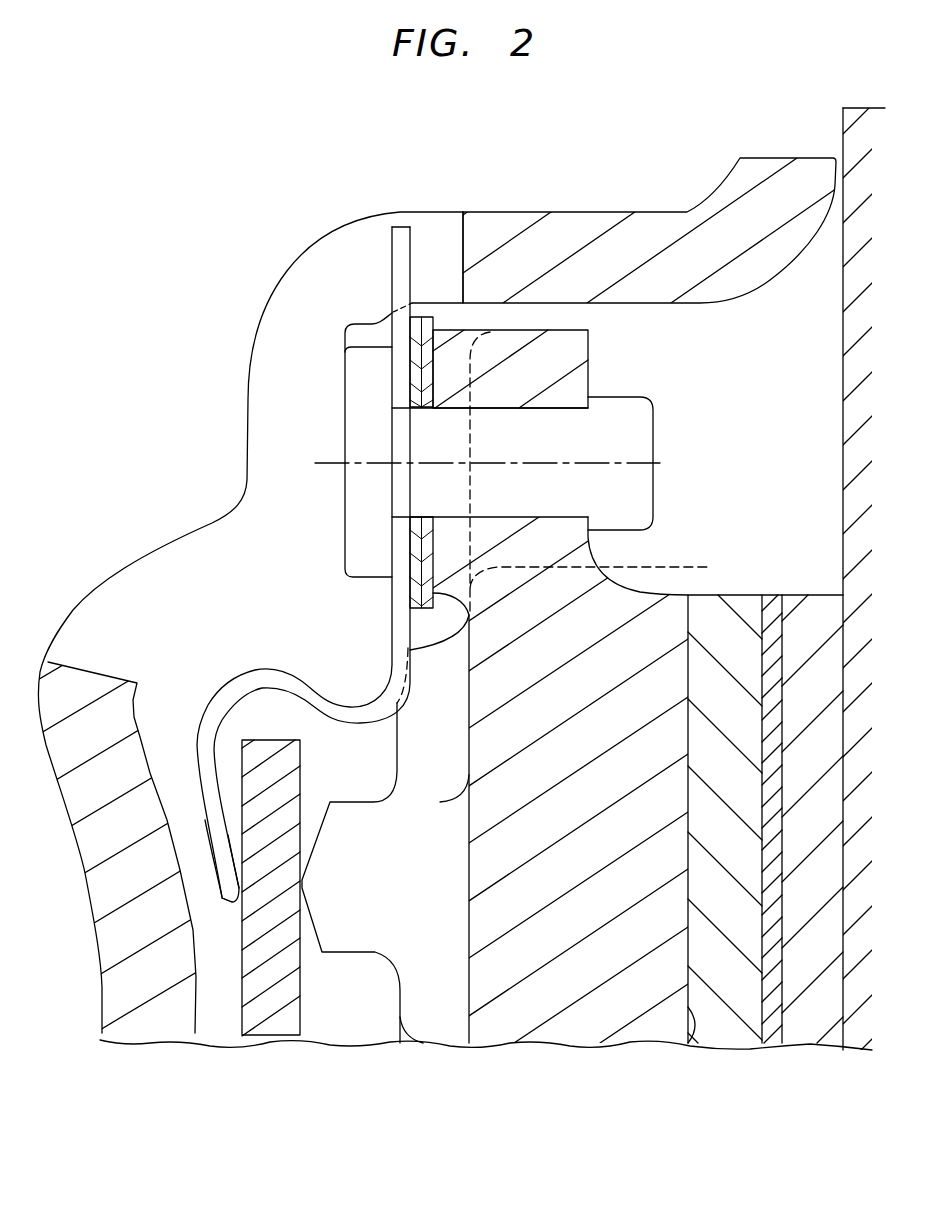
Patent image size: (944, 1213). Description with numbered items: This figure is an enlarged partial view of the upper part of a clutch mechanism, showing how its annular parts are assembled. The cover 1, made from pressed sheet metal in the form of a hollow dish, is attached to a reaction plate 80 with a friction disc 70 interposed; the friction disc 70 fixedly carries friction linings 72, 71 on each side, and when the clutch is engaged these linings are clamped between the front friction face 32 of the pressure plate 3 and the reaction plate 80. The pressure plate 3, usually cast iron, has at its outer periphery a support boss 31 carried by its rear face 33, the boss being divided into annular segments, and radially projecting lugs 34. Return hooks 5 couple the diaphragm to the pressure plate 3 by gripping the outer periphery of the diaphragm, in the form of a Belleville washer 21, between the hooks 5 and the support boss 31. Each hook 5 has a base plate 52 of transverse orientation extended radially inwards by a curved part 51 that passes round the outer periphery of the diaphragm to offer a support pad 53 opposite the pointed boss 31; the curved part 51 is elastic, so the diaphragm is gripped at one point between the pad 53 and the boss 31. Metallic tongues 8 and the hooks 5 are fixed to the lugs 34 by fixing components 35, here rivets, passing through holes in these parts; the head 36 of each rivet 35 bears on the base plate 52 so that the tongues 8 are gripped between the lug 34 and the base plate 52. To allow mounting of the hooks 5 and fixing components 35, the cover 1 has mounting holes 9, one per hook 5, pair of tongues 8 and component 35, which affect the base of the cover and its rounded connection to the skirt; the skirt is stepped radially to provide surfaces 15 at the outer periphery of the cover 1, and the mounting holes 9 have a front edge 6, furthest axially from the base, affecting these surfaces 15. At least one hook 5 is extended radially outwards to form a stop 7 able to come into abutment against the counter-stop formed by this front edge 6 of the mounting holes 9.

The cover 1 is at (170, 1045).
The pressure plate 3 is at (597, 1060).
The return hooks 5 is at (243, 646).
The front edge 6 is at (463, 228).
The stop 7 is at (391, 257).
The tongues 8 is at (422, 315).
The mounting holes 9 is at (88, 670).
The surfaces 15 is at (573, 212).
The Belleville washer 21 is at (242, 1007).
The support boss 31 is at (367, 928).
The front friction face 32 is at (687, 1048).
The rear face 33 is at (470, 1000).
The lugs 34 is at (560, 363).
The fixing components 35 is at (633, 436).
The head 36 is at (367, 372).
The curved part 51 is at (225, 848).
The base plate 52 is at (390, 593).
The support pad 53 is at (227, 905).
The friction disc 70 is at (778, 1050).
The friction lining 71 is at (808, 1032).
The friction lining 72 is at (723, 1027).
The reaction plate 80 is at (856, 138).